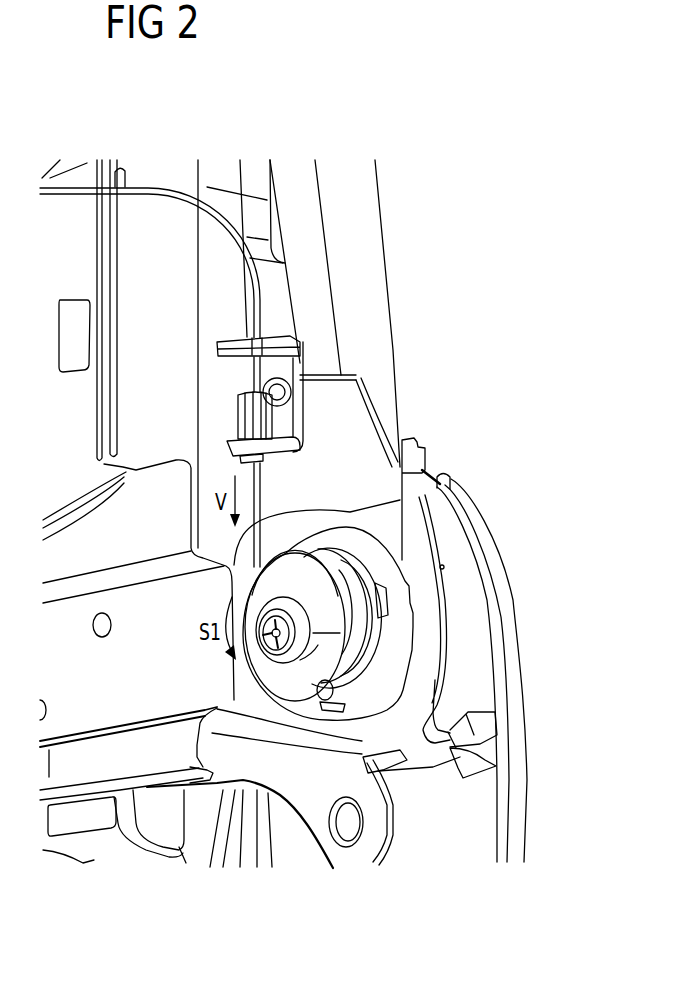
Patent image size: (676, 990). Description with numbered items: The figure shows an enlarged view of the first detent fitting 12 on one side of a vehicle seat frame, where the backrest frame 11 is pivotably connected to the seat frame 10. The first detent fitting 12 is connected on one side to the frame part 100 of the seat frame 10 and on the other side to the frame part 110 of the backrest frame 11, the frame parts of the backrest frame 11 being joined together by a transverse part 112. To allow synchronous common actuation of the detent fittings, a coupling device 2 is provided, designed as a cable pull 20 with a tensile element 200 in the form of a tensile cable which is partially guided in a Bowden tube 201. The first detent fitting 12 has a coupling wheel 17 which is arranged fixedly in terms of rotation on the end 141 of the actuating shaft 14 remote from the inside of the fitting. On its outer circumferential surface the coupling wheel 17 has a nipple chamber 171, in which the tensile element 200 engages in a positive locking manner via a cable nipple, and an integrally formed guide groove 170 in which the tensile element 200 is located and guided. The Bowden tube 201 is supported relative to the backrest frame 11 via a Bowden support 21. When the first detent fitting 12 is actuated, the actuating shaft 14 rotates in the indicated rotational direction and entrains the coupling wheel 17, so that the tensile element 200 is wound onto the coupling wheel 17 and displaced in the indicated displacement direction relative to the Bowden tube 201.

The coupling device 2 is at (165, 180).
The seat frame 10 is at (479, 882).
The frame part 100 is at (488, 837).
The backrest frame 11 is at (302, 148).
The frame part 110 is at (369, 277).
The transverse part 112 is at (102, 715).
The first detent fitting 12 is at (416, 561).
The actuating shaft 14 is at (265, 672).
The end of the actuating shaft 141 is at (289, 652).
The coupling wheel 17 is at (354, 684).
The guide groove 170 is at (348, 580).
The nipple chamber 171 is at (322, 702).
The cable pull 20 is at (265, 545).
The tensile element 200 is at (420, 444).
The Bowden tube 201 is at (260, 300).
The Bowden support 21 is at (268, 480).